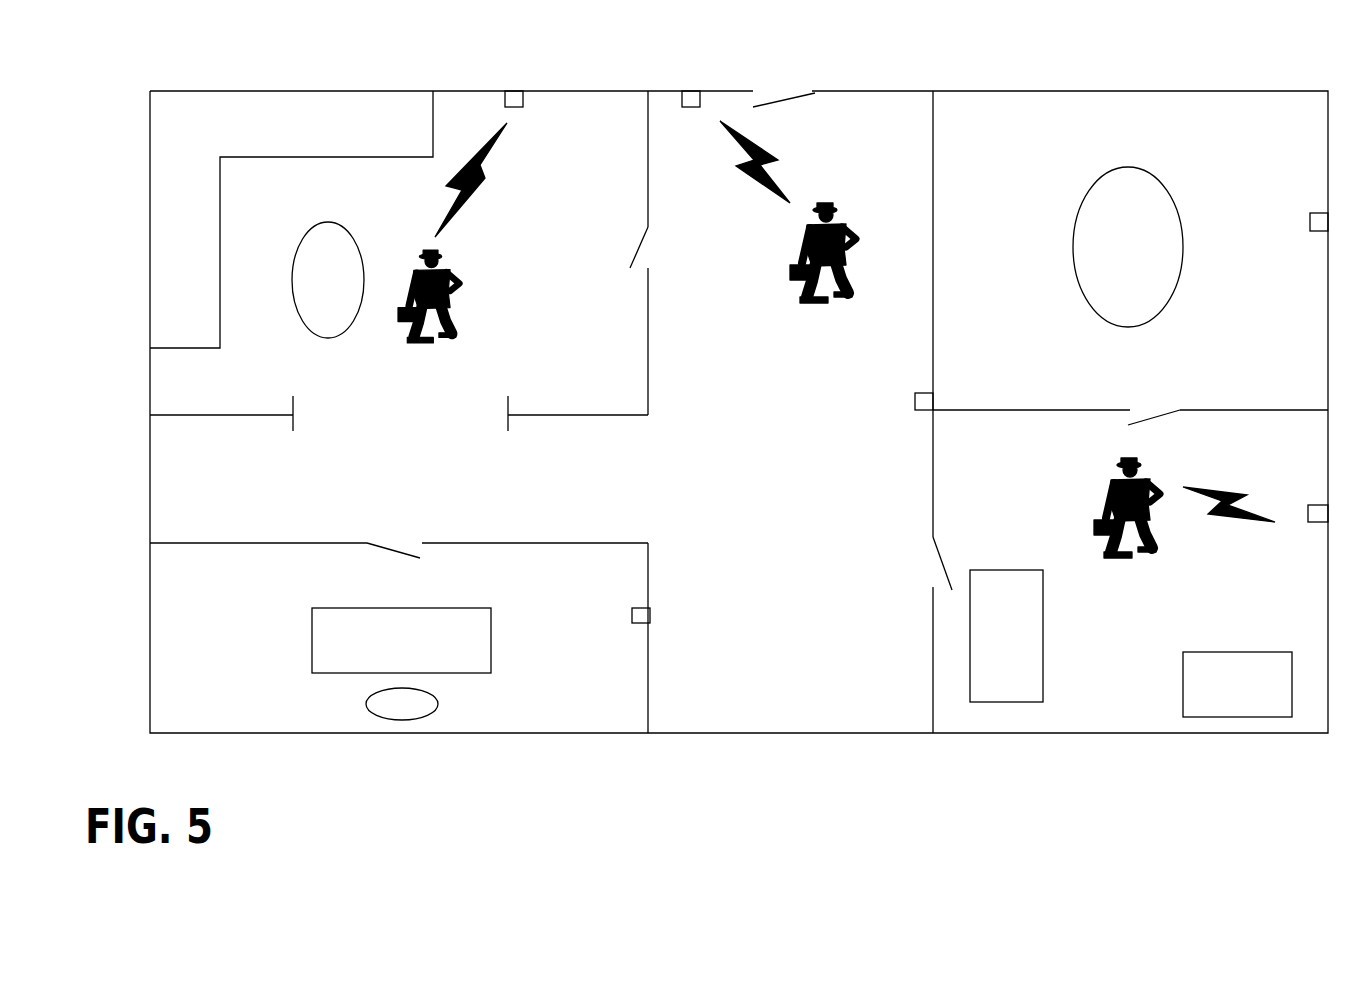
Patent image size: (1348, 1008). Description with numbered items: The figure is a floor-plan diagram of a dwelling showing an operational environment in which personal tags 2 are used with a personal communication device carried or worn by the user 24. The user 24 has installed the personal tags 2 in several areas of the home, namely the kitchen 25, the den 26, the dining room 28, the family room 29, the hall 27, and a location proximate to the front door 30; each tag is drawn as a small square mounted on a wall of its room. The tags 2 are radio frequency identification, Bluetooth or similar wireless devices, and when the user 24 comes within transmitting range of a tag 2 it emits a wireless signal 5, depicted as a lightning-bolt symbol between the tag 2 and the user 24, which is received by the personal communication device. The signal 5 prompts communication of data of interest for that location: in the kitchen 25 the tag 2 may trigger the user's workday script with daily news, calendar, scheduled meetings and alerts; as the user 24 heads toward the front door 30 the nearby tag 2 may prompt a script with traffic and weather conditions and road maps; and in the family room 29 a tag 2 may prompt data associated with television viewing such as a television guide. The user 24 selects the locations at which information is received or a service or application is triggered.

The personal tag 2 is at (680, 87).
The wireless signal 5 is at (470, 205).
The user 24 is at (400, 362).
The kitchen 25 is at (408, 197).
The den 26 is at (226, 609).
The hall 27 is at (816, 615).
The dining room 28 is at (1158, 144).
The family room 29 is at (1108, 451).
The front door 30 is at (789, 74).